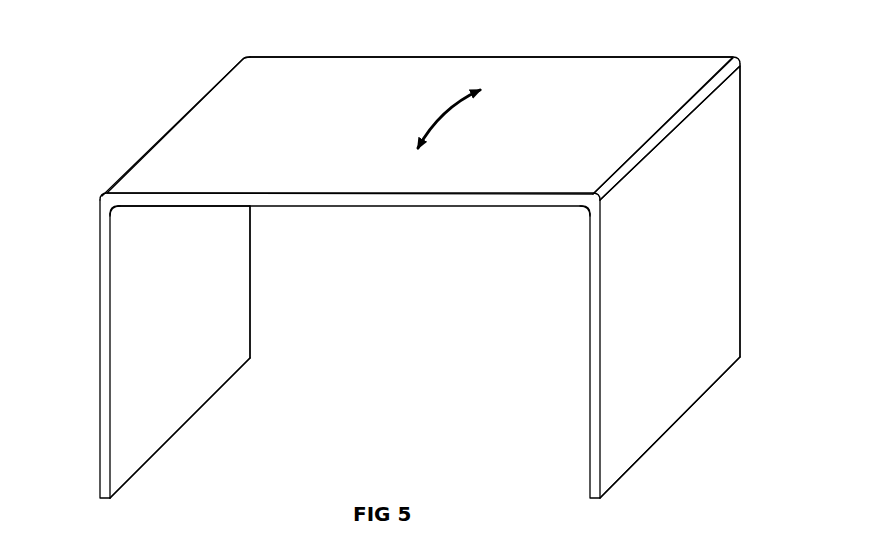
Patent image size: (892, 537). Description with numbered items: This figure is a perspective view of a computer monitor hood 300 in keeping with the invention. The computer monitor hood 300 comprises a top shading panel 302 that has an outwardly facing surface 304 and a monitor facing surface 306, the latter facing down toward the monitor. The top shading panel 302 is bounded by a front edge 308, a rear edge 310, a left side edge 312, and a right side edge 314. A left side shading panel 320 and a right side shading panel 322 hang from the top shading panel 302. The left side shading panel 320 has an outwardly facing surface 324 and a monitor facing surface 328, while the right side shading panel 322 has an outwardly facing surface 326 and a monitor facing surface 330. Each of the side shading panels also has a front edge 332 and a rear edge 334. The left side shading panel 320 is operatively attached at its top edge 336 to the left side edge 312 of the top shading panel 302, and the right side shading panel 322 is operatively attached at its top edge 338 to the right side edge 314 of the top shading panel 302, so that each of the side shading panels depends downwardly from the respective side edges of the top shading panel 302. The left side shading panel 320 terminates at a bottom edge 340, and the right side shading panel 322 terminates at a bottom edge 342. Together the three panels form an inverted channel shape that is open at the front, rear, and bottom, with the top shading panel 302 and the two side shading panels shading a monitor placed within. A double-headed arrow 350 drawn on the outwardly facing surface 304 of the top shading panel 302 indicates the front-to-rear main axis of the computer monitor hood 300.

The computer monitor hood 300 is at (426, 242).
The top shading panel 302 is at (345, 68).
The outwardly facing surface 304 is at (638, 117).
The monitor facing surface 306 is at (372, 212).
The front edge 308 is at (277, 198).
The rear edge 310 is at (583, 56).
The left side edge 312 is at (177, 122).
The right side edge 314 is at (685, 117).
The left side shading panel 320 is at (207, 384).
The right side shading panel 322 is at (667, 394).
The outwardly facing surface 324 is at (96, 270).
The outwardly facing surface 326 is at (695, 309).
The monitor facing surface 328 is at (216, 340).
The monitor facing surface 330 is at (588, 375).
The front edge 332 is at (111, 401).
The rear edge 334 is at (251, 323).
The top edge 336 is at (112, 208).
The top edge 338 is at (586, 211).
The bottom edge 340 is at (147, 461).
The bottom edge 342 is at (633, 469).
The arrow 350 is at (448, 120).